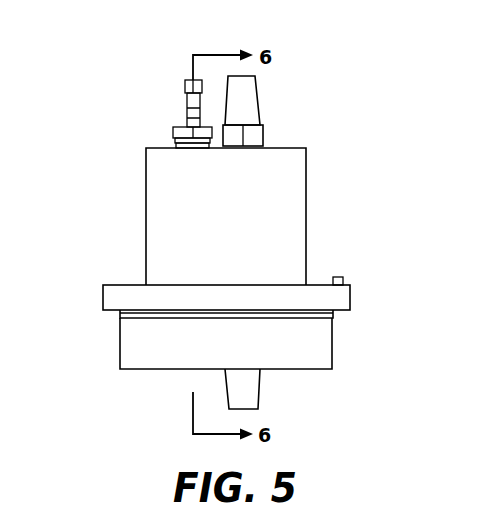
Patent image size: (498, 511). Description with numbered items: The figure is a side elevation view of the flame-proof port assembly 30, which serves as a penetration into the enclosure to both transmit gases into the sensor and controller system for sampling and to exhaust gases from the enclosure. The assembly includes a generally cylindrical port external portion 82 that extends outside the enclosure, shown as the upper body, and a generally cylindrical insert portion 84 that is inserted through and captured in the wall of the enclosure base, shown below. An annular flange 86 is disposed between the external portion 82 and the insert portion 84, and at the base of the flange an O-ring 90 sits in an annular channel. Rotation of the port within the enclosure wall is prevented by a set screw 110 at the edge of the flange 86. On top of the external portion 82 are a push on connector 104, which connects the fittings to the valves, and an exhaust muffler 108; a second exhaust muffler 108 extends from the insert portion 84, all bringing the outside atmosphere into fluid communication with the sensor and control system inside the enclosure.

The flame-proof port assembly 30 is at (138, 122).
The port external portion 82 is at (272, 162).
The insert portion 84 is at (130, 347).
The annular flange 86 is at (127, 284).
The O-ring 90 is at (121, 312).
The push on connectors 104 is at (191, 113).
The exhaust mufflers 108 is at (262, 100).
The set screw 110 is at (340, 277).